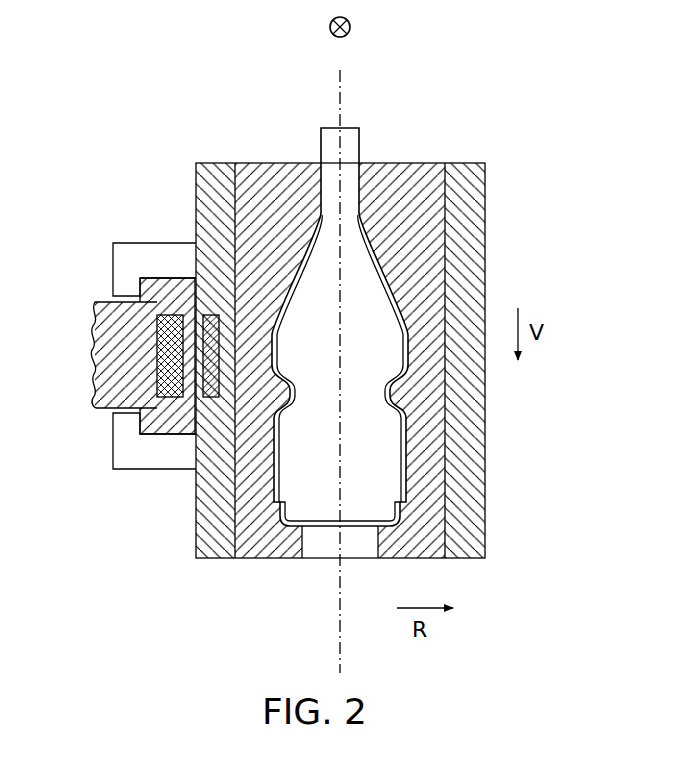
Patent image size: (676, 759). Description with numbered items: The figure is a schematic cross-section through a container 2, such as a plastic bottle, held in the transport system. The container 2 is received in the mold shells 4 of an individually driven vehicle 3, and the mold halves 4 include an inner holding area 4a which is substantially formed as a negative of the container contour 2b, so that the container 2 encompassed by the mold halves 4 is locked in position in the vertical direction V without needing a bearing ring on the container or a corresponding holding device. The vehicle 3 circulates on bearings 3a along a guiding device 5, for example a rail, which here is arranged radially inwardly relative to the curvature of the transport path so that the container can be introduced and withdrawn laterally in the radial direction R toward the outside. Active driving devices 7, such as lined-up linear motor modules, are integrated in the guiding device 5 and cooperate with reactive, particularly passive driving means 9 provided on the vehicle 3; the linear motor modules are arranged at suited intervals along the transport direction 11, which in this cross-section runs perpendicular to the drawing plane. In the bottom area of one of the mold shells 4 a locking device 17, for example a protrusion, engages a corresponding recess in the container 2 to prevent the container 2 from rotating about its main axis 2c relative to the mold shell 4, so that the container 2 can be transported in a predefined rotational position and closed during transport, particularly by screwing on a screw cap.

The container 2 is at (355, 142).
The container contour 2b is at (387, 413).
The main axis 2c is at (341, 657).
The vehicle 3 is at (485, 230).
The bearing 3a is at (115, 266).
The mold shell 4 is at (417, 163).
The inner holding area 4a is at (410, 412).
The guiding device 5 is at (90, 340).
The active driving device 7 is at (170, 313).
The passive driving means 9 is at (213, 398).
The transport direction 11 is at (352, 26).
The locking device 17 is at (281, 528).